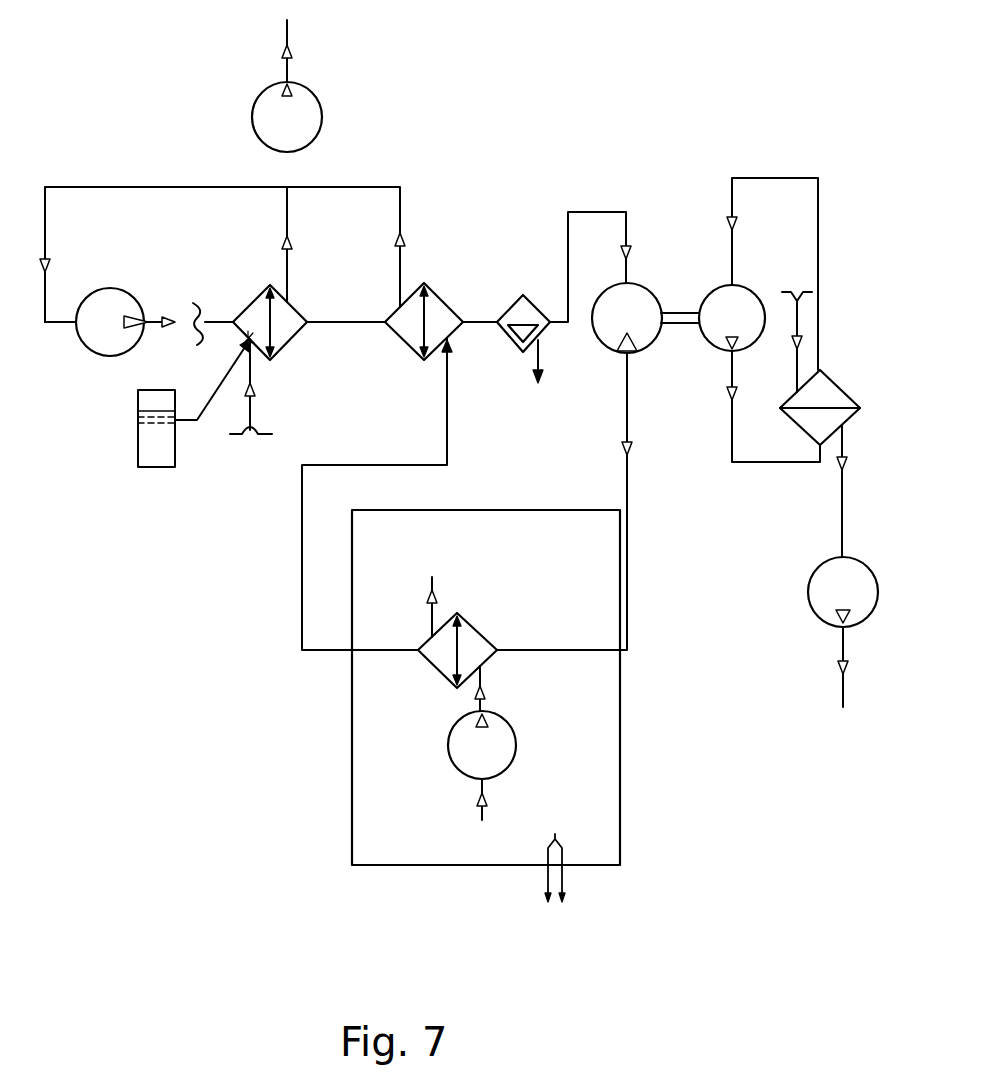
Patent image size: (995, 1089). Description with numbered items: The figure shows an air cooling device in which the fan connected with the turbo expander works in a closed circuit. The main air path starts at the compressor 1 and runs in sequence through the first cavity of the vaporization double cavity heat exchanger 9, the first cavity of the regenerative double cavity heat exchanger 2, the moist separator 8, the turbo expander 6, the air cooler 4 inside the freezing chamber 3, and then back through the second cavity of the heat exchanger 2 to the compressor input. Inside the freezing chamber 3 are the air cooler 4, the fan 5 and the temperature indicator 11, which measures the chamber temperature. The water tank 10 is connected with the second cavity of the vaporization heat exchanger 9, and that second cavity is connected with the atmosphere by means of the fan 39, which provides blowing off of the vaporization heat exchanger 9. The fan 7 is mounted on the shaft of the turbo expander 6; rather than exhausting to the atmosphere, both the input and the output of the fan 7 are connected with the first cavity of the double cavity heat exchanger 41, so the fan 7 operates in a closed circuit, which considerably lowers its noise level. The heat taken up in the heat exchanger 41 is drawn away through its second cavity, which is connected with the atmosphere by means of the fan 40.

The compressor 1 is at (112, 302).
The regenerative double cavity heat exchanger 2 is at (440, 313).
The freezing chamber 3 is at (365, 700).
The air cooler 4 is at (475, 640).
The fan 5 is at (500, 735).
The turbo expander 6 is at (640, 297).
The fan 7 is at (742, 298).
The moist separator 8 is at (522, 300).
The double cavity heat exchanger 9 is at (287, 317).
The water tank 10 is at (148, 438).
The temperature indicator 11 is at (563, 877).
The fan 39 is at (302, 108).
The fan 40 is at (825, 602).
The double cavity heat exchanger 41 is at (838, 393).